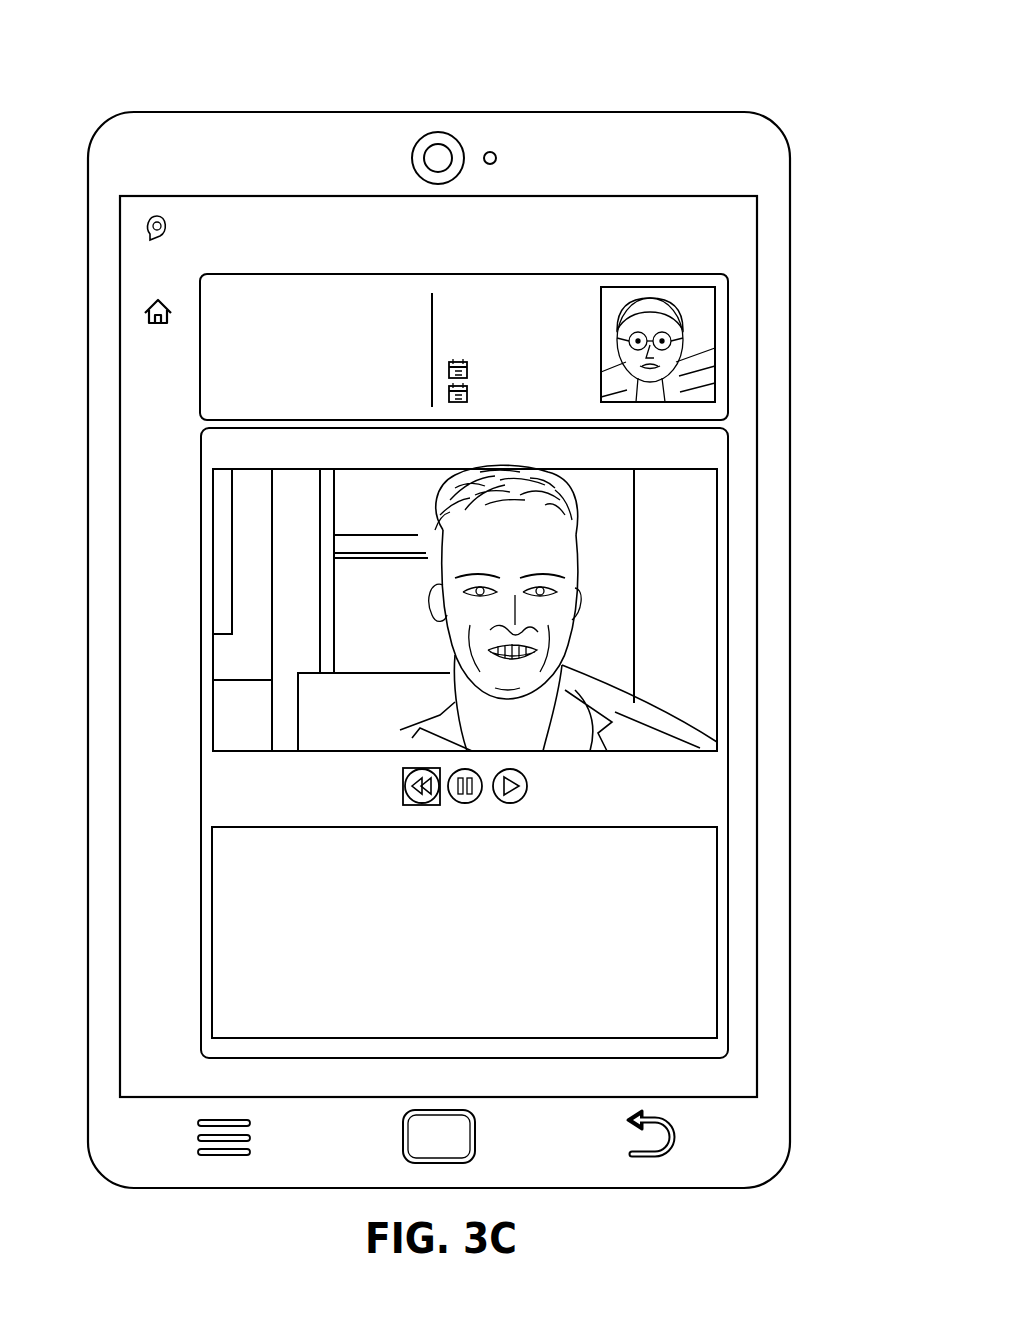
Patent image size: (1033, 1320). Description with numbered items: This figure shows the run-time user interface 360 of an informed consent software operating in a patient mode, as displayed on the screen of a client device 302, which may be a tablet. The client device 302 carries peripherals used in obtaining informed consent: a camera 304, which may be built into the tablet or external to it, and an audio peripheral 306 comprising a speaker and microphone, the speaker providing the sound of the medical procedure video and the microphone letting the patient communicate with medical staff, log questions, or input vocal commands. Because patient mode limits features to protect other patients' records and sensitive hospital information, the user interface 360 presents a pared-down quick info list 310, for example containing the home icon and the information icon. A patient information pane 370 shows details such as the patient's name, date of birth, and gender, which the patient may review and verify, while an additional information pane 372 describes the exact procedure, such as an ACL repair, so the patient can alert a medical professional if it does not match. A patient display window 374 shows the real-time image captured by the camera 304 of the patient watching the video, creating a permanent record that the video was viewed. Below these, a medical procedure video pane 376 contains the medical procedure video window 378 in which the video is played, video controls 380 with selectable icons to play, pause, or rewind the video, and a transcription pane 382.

The client device 302 is at (790, 208).
The camera 304 is at (503, 140).
The audio peripheral 306 is at (704, 1198).
The quick info list 310 is at (128, 320).
The user interface 360 is at (766, 73).
The patient information pane 370 is at (376, 311).
The additional information pane 372 is at (582, 293).
The patient display window 374 is at (716, 301).
The medical procedure video pane 376 is at (166, 468).
The medical procedure video window 378 is at (720, 556).
The video controls 380 is at (539, 786).
The transcription pane 382 is at (722, 829).